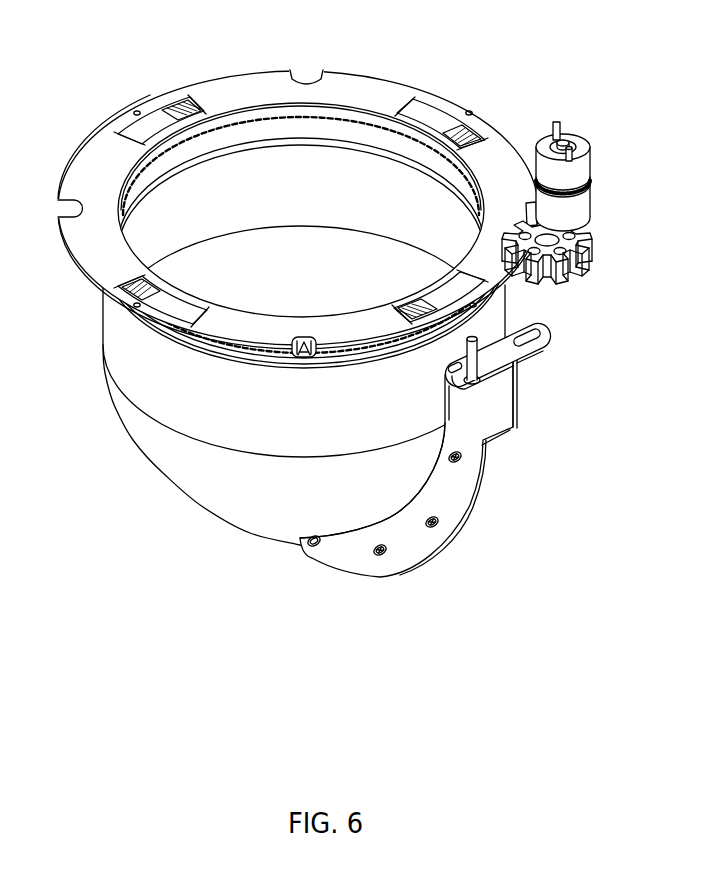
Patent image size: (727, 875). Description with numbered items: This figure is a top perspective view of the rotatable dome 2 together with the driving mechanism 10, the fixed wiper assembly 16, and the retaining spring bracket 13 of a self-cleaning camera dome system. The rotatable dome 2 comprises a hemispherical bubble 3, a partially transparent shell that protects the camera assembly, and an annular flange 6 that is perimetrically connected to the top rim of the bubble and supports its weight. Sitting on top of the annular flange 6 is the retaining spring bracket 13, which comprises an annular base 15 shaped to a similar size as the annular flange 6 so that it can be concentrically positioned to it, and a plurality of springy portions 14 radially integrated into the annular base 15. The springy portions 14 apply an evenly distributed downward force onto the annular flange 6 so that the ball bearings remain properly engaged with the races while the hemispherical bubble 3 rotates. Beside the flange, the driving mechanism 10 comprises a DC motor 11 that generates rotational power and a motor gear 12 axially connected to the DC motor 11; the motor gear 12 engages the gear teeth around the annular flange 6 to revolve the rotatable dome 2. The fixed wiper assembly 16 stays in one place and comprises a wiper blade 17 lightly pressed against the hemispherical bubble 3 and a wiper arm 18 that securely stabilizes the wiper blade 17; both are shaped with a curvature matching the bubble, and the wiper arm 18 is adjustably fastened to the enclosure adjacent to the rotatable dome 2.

The rotatable dome 2 is at (287, 328).
The hemispherical bubble 3 is at (320, 443).
The annular flange 6 is at (304, 361).
The driving mechanism 10 is at (601, 212).
The direct current (DC) motor 11 is at (578, 172).
The motor gear 12 is at (577, 265).
The retaining spring bracket 13 is at (298, 189).
The plurality of springy portions 14 is at (140, 135).
The annular base 15 is at (80, 173).
The fixed wiper assembly 16 is at (425, 475).
The wiper blade 17 is at (387, 528).
The wiper arm 18 is at (418, 556).